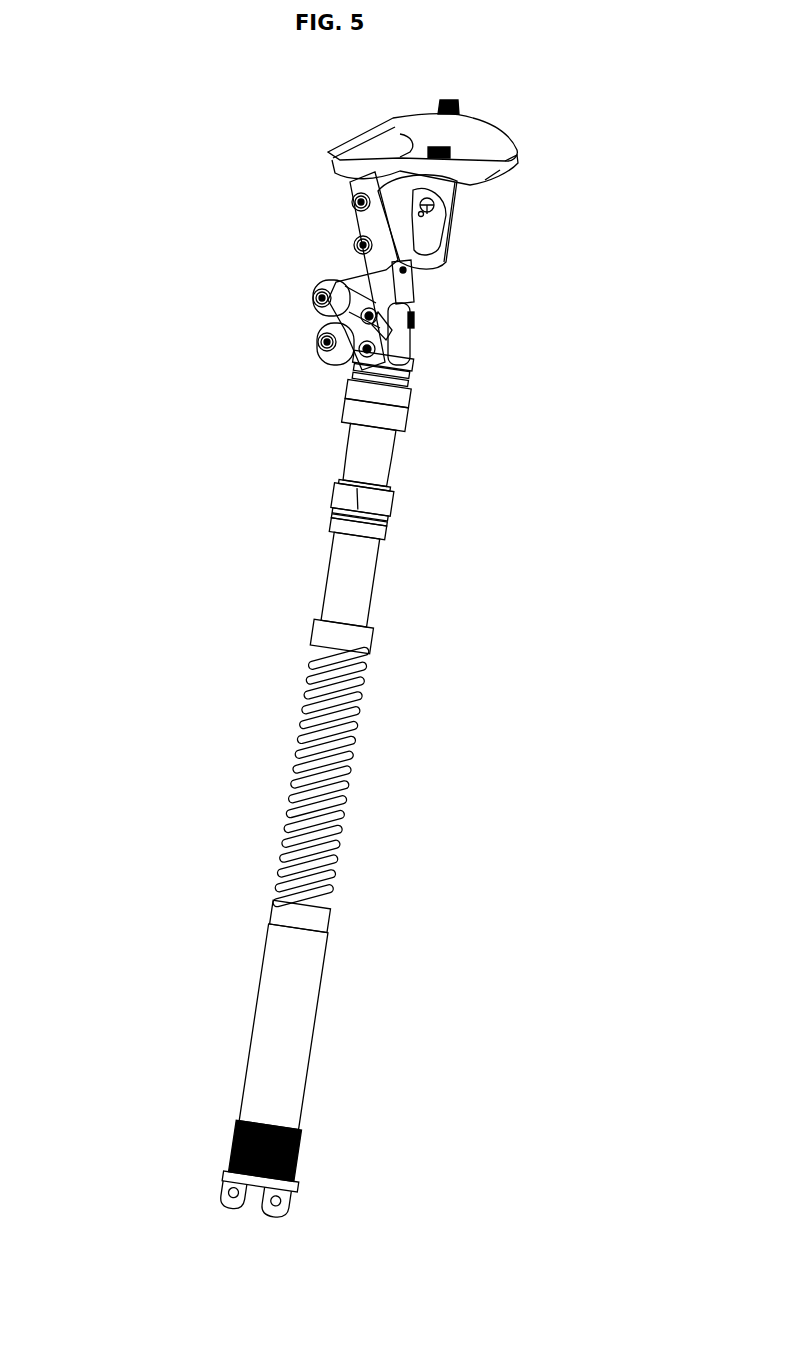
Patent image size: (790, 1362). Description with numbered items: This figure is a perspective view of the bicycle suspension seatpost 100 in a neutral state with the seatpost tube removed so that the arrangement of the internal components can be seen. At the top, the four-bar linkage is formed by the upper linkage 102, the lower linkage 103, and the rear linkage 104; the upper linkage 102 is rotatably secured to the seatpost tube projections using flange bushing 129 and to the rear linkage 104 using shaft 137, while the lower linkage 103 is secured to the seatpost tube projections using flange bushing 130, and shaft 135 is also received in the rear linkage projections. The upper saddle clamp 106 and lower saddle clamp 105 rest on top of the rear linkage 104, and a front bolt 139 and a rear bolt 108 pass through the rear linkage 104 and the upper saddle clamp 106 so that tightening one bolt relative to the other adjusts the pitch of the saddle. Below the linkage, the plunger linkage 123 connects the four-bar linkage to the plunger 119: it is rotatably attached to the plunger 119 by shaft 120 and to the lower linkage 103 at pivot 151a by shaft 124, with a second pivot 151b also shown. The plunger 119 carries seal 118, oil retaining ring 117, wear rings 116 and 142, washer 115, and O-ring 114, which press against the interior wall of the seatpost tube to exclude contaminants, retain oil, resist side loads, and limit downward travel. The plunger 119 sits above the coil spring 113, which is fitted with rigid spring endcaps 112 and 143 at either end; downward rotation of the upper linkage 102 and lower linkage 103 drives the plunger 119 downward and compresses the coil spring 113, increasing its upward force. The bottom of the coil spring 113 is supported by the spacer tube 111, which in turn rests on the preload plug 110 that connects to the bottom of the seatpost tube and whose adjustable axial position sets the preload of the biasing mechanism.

The bicycle suspension seatpost 100 is at (102, 150).
The upper linkage 102 is at (342, 267).
The lower linkage 103 is at (400, 290).
The rear linkage 104 is at (430, 250).
The lower saddle clamp 105 is at (497, 168).
The upper saddle clamp 106 is at (467, 128).
The rear bolt 108 is at (445, 205).
The preload plug 110 is at (296, 1168).
The spacer tube 111 is at (277, 1028).
The spring endcap 112 is at (352, 645).
The coil spring 113 is at (340, 778).
The O-ring 114 is at (375, 530).
The washer 115 is at (348, 518).
The wear ring 116 is at (380, 503).
The oil retaining ring 117 is at (372, 393).
The seal 118 is at (407, 353).
The plunger 119 is at (366, 463).
The shaft 120 is at (412, 323).
The plunger linkage 123 is at (400, 310).
The shaft 124 is at (417, 318).
The flange bushing 129 is at (335, 298).
The flange bushing 130 is at (340, 340).
The shaft 135 is at (354, 243).
The shaft 137 is at (351, 202).
The front bolt 139 is at (424, 213).
The wear ring 142 is at (387, 417).
The spring endcap 143 is at (308, 920).
The pivot 151a is at (410, 327).
The second pivot 151b is at (408, 335).